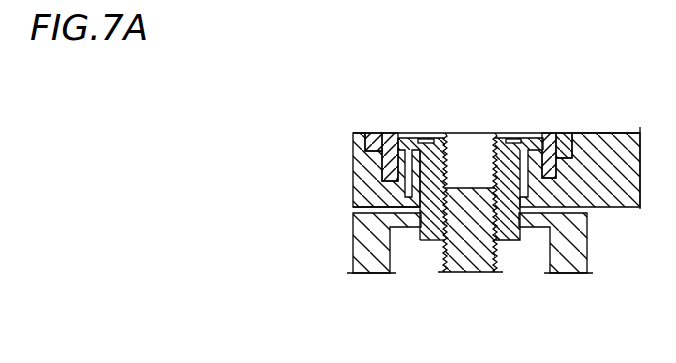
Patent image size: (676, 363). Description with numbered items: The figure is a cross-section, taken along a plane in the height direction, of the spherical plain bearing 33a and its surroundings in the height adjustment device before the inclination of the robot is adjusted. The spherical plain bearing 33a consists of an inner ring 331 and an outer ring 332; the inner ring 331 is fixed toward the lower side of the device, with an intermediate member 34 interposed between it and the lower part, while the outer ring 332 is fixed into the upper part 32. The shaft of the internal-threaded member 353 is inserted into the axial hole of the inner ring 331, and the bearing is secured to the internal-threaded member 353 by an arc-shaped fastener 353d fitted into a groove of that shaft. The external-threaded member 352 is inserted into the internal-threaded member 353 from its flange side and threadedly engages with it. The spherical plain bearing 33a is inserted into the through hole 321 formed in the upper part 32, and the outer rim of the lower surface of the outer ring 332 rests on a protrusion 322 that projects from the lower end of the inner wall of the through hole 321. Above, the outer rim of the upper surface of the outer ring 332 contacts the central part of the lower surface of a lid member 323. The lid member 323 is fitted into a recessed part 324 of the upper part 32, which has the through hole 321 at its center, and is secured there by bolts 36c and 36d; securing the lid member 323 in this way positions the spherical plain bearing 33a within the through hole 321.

The upper part 32 is at (358, 176).
The intermediate member 34 is at (358, 247).
The bolt 36c is at (393, 133).
The bolt 36d is at (552, 133).
The through hole 321 is at (426, 133).
The protrusion 322 is at (557, 247).
The lid member 323 is at (372, 133).
The recessed part 324 is at (380, 197).
The inner ring 331 is at (523, 133).
The outer ring 332 is at (538, 133).
The spherical plain bearing 33a is at (425, 243).
The external-threaded member 352 is at (473, 247).
The internal-threaded member 353 is at (508, 240).
The arc-shaped fastener 353d is at (430, 139).